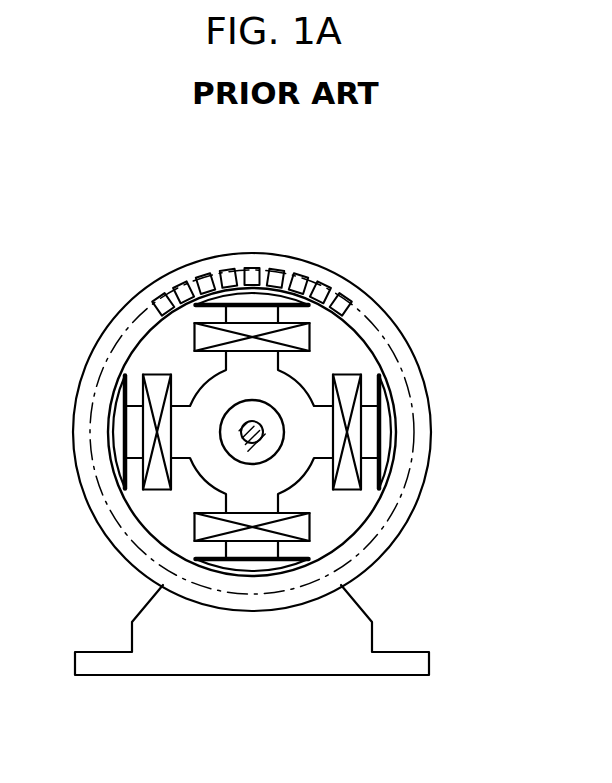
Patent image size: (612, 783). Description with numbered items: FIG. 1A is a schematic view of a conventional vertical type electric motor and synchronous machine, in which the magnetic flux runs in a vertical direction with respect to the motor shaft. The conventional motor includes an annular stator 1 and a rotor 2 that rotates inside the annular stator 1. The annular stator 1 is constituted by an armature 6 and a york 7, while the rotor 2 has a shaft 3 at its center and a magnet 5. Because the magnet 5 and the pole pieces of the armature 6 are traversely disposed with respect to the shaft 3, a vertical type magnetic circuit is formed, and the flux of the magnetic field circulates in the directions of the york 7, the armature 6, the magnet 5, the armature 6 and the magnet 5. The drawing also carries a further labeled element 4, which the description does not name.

The annular stator 1 is at (388, 282).
The rotor 2 is at (283, 277).
The shaft 3 is at (237, 448).
The coil 4 is at (311, 334).
The magnet 5 is at (207, 387).
The armature 6 is at (240, 262).
The york 7 is at (425, 453).